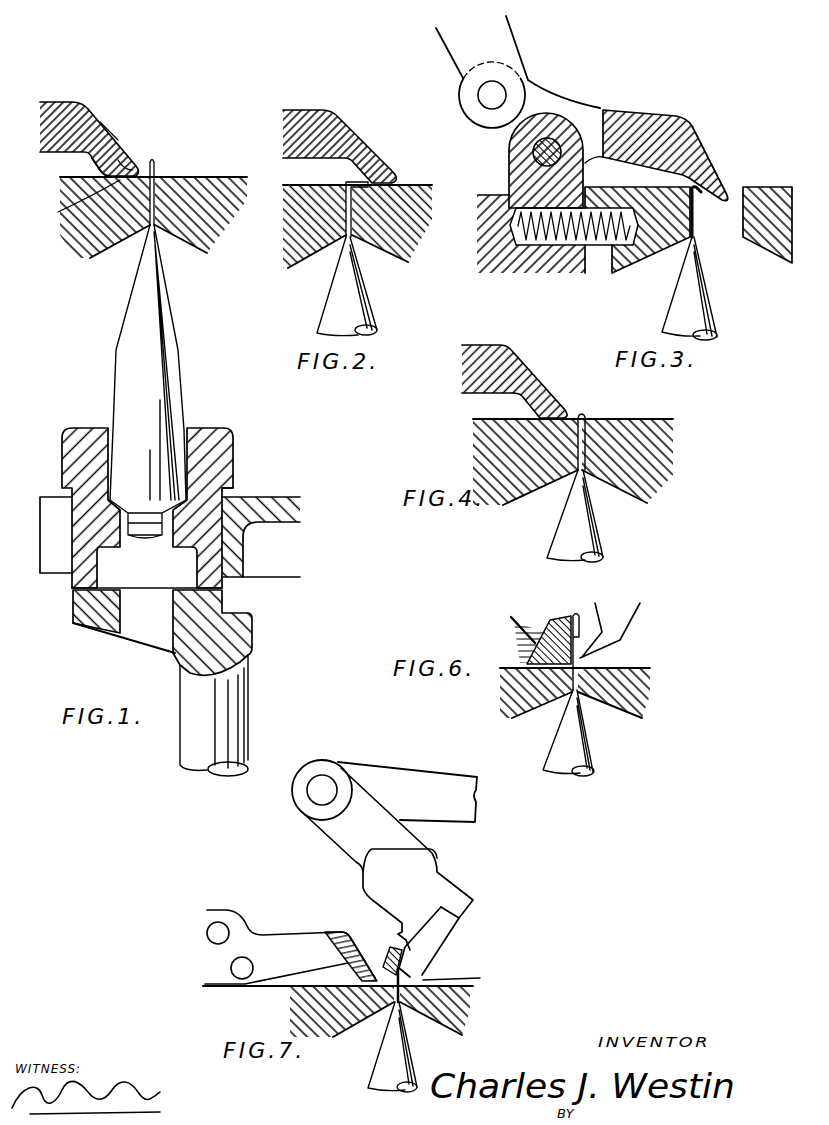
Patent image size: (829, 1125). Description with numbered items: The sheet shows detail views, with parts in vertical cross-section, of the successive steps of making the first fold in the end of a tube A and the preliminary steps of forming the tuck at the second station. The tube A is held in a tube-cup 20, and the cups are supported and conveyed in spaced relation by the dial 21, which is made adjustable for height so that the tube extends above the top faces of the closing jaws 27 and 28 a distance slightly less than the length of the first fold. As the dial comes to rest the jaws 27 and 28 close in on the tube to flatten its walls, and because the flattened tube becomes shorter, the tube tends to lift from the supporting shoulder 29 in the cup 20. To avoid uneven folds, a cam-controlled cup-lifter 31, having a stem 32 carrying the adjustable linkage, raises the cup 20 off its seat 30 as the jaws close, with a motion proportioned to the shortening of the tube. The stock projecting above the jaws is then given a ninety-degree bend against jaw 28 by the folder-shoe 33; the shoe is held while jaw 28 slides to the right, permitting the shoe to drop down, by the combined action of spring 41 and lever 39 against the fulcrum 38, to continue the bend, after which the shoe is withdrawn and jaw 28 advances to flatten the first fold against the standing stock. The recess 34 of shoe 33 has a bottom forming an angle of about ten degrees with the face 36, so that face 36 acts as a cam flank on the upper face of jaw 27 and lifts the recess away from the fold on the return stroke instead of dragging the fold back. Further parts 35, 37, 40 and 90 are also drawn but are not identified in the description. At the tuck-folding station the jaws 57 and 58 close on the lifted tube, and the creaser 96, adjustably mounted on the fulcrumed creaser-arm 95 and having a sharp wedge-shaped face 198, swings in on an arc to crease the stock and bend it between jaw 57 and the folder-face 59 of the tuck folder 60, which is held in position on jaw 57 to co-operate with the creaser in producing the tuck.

In FIG. 1, the tube-cup 20 is at (210, 430).
In FIG. 1, the dial 21 is at (272, 523).
In FIG. 1, the closing jaw 27 is at (80, 247).
In FIG. 2, the closing jaw 27 is at (293, 238).
In FIG. 3, the closing jaw 27 is at (637, 235).
In FIG. 4, the closing jaw 27 is at (498, 456).
In FIG. 1, the closing jaw 28 is at (200, 177).
In FIG. 2, the closing jaw 28 is at (412, 229).
In FIG. 3, the closing jaw 28 is at (762, 174).
In FIG. 4, the closing jaw 28 is at (665, 458).
In FIG. 1, the supporting shoulder 29 is at (226, 578).
In FIG. 1, the seat 30 is at (236, 489).
In FIG. 1, the cup-lifter 31 is at (124, 642).
In FIG. 1, the stem 32 is at (240, 703).
In FIG. 1, the folder-shoe 33 is at (78, 101).
In FIG. 2, the folder-shoe 33 is at (315, 108).
In FIG. 3, the folder-shoe 33 is at (680, 125).
In FIG. 4, the folder-shoe 33 is at (523, 367).
In FIG. 1, the recess 34 is at (112, 146).
In FIG. 1, the jaw tip 35 is at (130, 166).
In FIG. 1, the face 36 is at (96, 164).
In FIG. 1, the recess 37 is at (70, 204).
In FIG. 3, the fulcrum 38 is at (550, 140).
In FIG. 3, the lever 39 is at (512, 36).
In FIG. 3, the pivoted jaw block 40 is at (509, 176).
In FIG. 3, the spring 41 is at (598, 245).
In FIG. 6, the jaw 57 is at (508, 698).
In FIG. 7, the jaw 57 is at (350, 1021).
In FIG. 6, the jaw 58 is at (645, 698).
In FIG. 7, the jaw 58 is at (458, 1020).
In FIG. 6, the folder-face 59 is at (552, 632).
In FIG. 7, the folder-face 59 is at (390, 952).
In FIG. 7, the tuck folder 60 is at (333, 932).
In FIG. 7, the lever 90 is at (445, 821).
In FIG. 7, the creaser-arm 95 is at (440, 873).
In FIG. 6, the creaser 96 is at (630, 628).
In FIG. 7, the creaser 96 is at (438, 945).
In FIG. 7, the wedge-shaped face 198 is at (468, 981).
In FIG. 1, the tube A is at (177, 362).
In FIG. 2, the tube A is at (375, 304).
In FIG. 3, the tube A is at (707, 300).
In FIG. 4, the tube A is at (600, 541).
In FIG. 6, the tube A is at (590, 757).
In FIG. 7, the tube A is at (415, 1057).